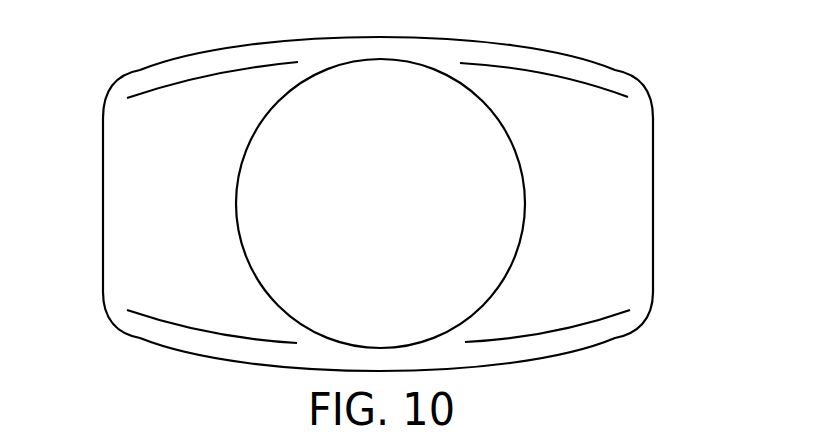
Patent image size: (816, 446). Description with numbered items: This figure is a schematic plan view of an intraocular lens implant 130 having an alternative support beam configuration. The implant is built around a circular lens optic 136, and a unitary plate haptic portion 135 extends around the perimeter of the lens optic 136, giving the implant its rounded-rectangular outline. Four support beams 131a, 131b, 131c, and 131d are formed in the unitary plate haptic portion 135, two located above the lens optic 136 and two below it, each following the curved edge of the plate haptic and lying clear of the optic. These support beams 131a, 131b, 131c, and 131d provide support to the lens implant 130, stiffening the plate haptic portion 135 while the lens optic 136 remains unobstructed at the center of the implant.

The lens implant 130 is at (692, 200).
The unitary plate haptic portion 135 is at (108, 147).
The lens optic 136 is at (502, 258).
The support beam 131a is at (533, 73).
The support beam 131b is at (207, 73).
The support beam 131c is at (190, 328).
The support beam 131d is at (558, 330).